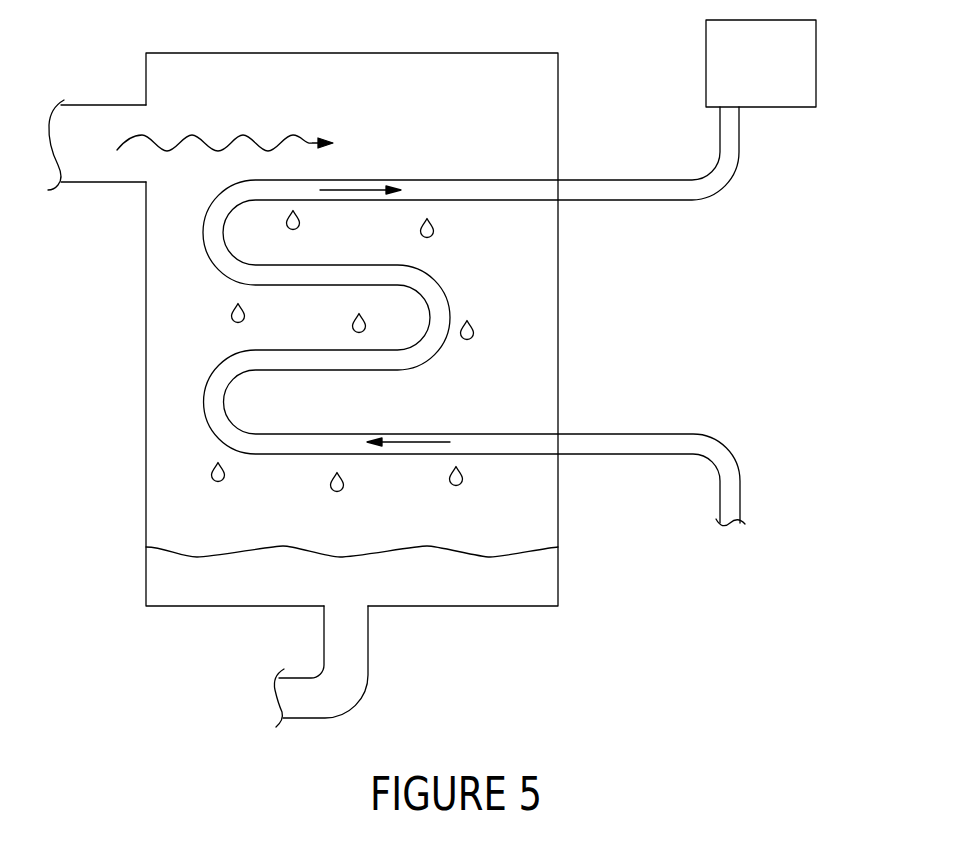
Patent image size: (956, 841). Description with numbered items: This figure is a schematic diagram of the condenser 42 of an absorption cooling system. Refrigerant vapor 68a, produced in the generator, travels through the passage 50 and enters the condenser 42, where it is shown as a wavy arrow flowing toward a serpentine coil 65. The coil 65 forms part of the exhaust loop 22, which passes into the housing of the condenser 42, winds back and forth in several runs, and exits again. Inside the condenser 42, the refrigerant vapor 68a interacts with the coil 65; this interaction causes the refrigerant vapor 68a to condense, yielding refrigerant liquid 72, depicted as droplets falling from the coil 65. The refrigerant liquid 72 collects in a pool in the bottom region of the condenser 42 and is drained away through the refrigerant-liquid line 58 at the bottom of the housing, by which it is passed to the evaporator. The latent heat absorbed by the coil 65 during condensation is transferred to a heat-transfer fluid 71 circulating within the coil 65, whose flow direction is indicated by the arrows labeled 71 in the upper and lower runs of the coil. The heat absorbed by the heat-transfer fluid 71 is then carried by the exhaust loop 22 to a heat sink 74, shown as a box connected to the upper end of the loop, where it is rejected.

The condenser 42 is at (477, 53).
The passage 50 is at (96, 105).
The refrigerant vapor 68a is at (242, 133).
The heat-transfer fluid 71 is at (358, 188).
The coil 65 is at (440, 342).
The heat sink 74 is at (816, 66).
The exhaust loop 22 is at (742, 489).
The refrigerant liquid 72 is at (212, 472).
The refrigerant-liquid line 58 is at (370, 647).